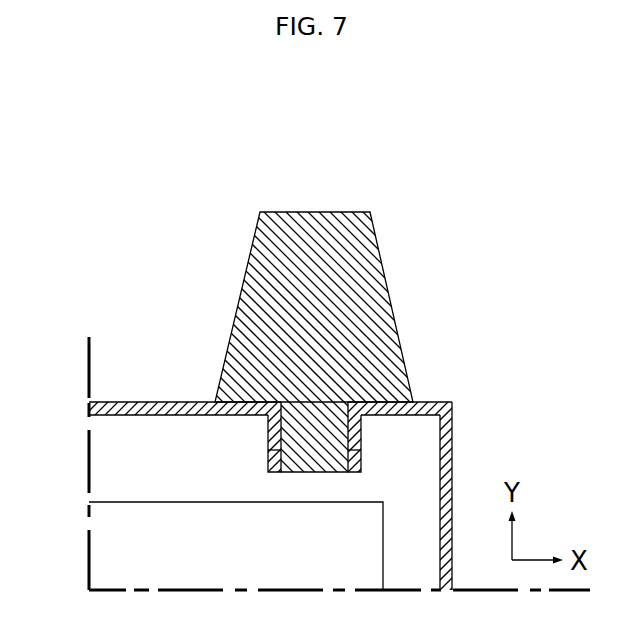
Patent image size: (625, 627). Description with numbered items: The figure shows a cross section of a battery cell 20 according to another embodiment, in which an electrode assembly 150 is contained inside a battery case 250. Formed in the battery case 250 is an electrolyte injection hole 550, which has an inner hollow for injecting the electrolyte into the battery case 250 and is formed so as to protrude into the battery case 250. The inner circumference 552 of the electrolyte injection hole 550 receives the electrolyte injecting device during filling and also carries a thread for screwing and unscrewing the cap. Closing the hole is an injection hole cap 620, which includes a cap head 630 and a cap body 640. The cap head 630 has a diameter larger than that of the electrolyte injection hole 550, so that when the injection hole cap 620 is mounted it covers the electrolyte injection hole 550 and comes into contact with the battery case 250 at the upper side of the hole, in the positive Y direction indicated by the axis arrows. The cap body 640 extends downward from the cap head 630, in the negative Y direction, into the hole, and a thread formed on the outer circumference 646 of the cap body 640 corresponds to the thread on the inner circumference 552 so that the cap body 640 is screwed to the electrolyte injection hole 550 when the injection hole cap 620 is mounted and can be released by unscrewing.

The battery cell 20 is at (138, 148).
The electrode assembly 150 is at (89, 541).
The battery case 250 is at (92, 410).
The injection hole cap 620 is at (312, 313).
The cap head 630 is at (262, 253).
The cap body 640 is at (281, 432).
The outer circumference of the cap body 646 is at (281, 460).
The electrolyte injection hole 550 is at (348, 432).
The inner circumference of the electrolyte injection hole 552 is at (348, 460).